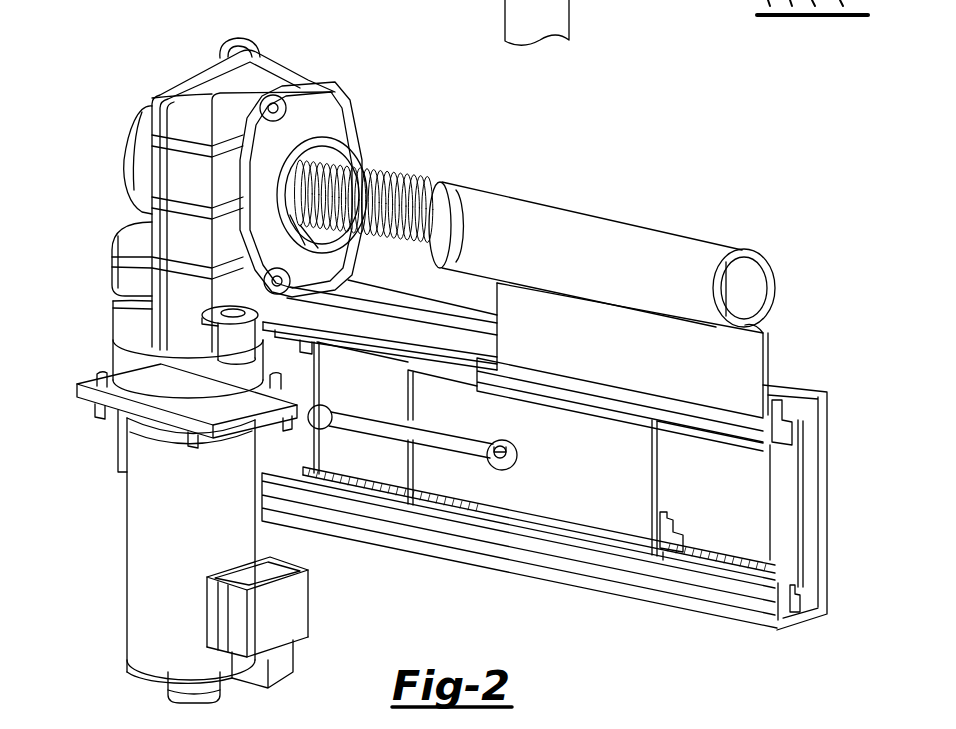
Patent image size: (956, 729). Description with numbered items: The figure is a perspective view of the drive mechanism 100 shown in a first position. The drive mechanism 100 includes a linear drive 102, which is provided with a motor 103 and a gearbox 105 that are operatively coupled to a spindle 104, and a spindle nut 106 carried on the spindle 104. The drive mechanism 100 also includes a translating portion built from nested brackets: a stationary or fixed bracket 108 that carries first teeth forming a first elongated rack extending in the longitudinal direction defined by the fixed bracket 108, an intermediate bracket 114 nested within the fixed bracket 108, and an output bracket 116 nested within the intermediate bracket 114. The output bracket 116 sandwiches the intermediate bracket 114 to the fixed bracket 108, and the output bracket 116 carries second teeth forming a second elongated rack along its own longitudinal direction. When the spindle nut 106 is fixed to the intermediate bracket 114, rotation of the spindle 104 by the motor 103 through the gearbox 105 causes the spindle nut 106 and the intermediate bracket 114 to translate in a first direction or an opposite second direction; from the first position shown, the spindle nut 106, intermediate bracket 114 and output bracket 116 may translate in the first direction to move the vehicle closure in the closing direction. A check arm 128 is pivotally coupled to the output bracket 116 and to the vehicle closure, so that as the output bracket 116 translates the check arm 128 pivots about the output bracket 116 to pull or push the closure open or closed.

The drive mechanism 100 is at (118, 42).
The linear drive 102 is at (127, 166).
The motor 103 is at (125, 568).
The spindle 104 is at (377, 190).
The gearbox 105 is at (125, 190).
The spindle nut 106 is at (450, 190).
The fixed bracket 108 is at (790, 390).
The intermediate bracket 114 is at (777, 507).
The output bracket 116 is at (614, 511).
The check arm 128 is at (420, 455).